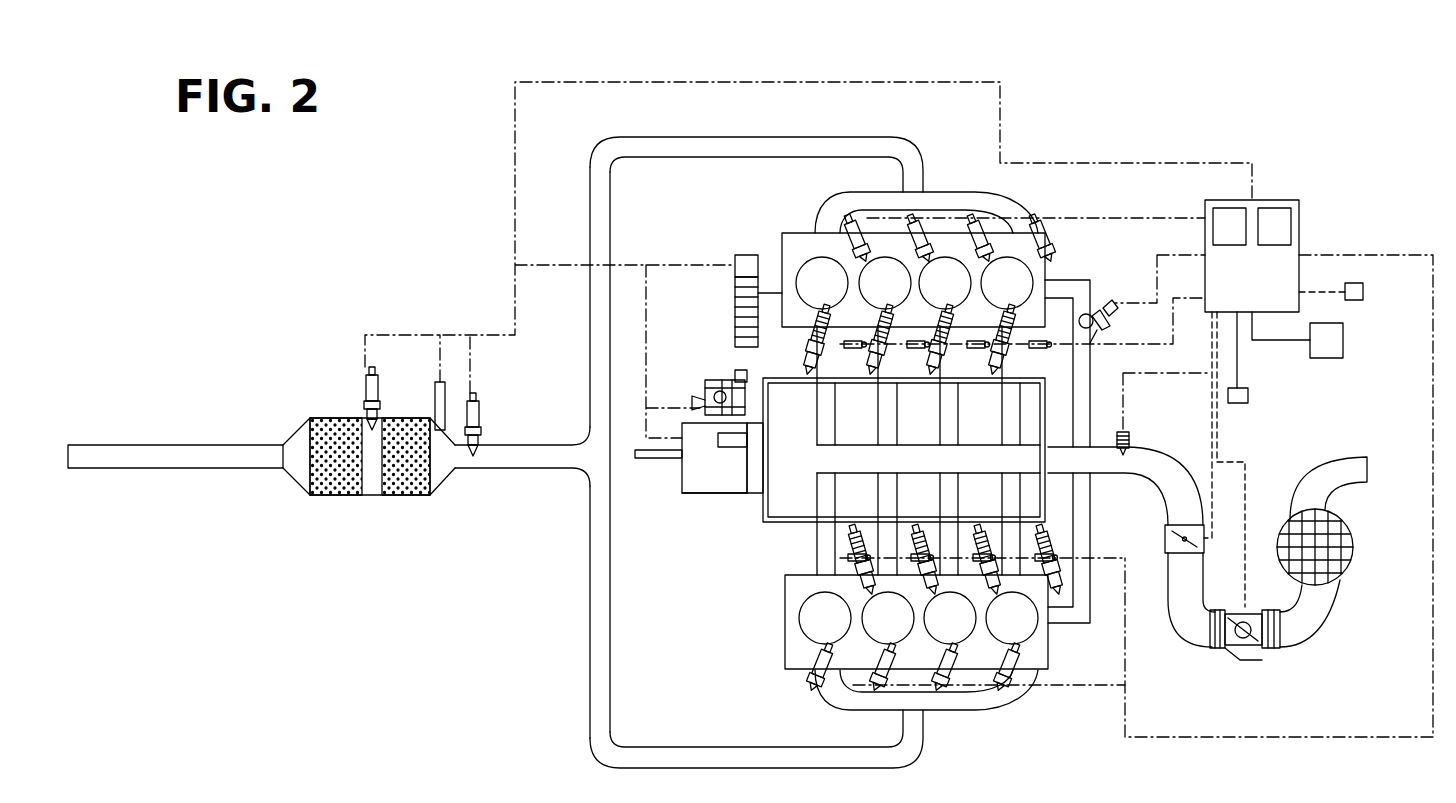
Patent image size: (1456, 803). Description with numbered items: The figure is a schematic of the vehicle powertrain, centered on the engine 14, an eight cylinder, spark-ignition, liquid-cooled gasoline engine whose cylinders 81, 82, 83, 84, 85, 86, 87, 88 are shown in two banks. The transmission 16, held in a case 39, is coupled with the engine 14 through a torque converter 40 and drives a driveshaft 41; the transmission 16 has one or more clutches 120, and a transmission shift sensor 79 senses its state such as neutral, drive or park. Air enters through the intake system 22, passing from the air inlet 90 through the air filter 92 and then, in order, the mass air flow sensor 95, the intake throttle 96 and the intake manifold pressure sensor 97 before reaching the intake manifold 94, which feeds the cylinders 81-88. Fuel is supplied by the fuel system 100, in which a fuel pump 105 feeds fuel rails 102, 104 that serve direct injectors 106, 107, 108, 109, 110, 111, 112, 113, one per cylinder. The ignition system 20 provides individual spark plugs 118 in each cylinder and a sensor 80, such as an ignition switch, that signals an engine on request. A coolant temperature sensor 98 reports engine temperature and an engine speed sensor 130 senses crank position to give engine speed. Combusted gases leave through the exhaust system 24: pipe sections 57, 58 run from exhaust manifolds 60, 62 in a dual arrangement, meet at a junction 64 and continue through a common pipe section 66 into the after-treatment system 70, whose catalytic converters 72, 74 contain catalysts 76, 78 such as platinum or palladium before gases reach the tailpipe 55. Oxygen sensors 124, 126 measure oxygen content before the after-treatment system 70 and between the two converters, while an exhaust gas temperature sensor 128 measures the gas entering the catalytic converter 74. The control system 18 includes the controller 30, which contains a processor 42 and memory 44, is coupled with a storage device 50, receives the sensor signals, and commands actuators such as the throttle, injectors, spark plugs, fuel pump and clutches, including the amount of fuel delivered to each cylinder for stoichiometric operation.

The engine 14 is at (1055, 423).
The transmission 16 is at (689, 475).
The control system 18 is at (1250, 212).
The ignition system 20 is at (1145, 143).
The intake system 22 is at (1089, 447).
The exhaust system 24 is at (693, 452).
The controller 30 is at (1239, 287).
The case 39 is at (690, 495).
The torque converter 40 is at (752, 470).
The driveshaft 41 is at (662, 455).
The processor 42 is at (1220, 225).
The memory 44 is at (1283, 230).
The storage device 50 is at (1328, 360).
The tailpipe 55 is at (238, 470).
The pipe section 57 is at (898, 160).
The pipe section 58 is at (926, 704).
The exhaust manifold 60 is at (1070, 188).
The exhaust manifold 62 is at (989, 705).
The junction 64 is at (597, 462).
The common pipe section 66 is at (480, 455).
The after-treatment system 70 is at (376, 493).
The catalytic converter 72 is at (352, 418).
The catalytic converter 74 is at (425, 496).
The catalyst 76 is at (342, 488).
The catalyst 78 is at (408, 483).
The transmission shift sensor 79 is at (1240, 404).
The sensor 80 is at (1363, 292).
The cylinder 81 is at (994, 294).
The cylinder 82 is at (999, 629).
The cylinder 83 is at (932, 294).
The cylinder 84 is at (937, 629).
The cylinder 85 is at (872, 294).
The cylinder 86 is at (875, 629).
The cylinder 87 is at (809, 294).
The cylinder 88 is at (812, 629).
The air inlet 90 is at (1235, 559).
The air filter 92 is at (1343, 578).
The intake manifold 94 is at (1068, 455).
The mass air flow sensor 95 is at (1252, 652).
The intake throttle 96 is at (1165, 545).
The intake manifold pressure sensor 97 is at (1133, 440).
The coolant temperature sensor 98 is at (1110, 300).
The fuel system 100 is at (835, 420).
The fuel rail 102 is at (800, 390).
The fuel rail 104 is at (805, 518).
The fuel pump 105 is at (738, 378).
The fuel injector 106 is at (1040, 345).
The fuel injector 107 is at (988, 368).
The fuel injector 108 is at (922, 375).
The fuel injector 109 is at (828, 343).
The fuel injector 110 is at (1035, 545).
The fuel injector 111 is at (978, 535).
The fuel injector 112 is at (912, 530).
The fuel injector 113 is at (830, 560).
The spark plug 118 is at (818, 250).
The clutch 120 is at (730, 447).
The oxygen sensor 124 is at (482, 420).
The oxygen sensor 126 is at (366, 380).
The exhaust gas temperature sensor 128 is at (434, 393).
The engine speed sensor 130 is at (745, 258).